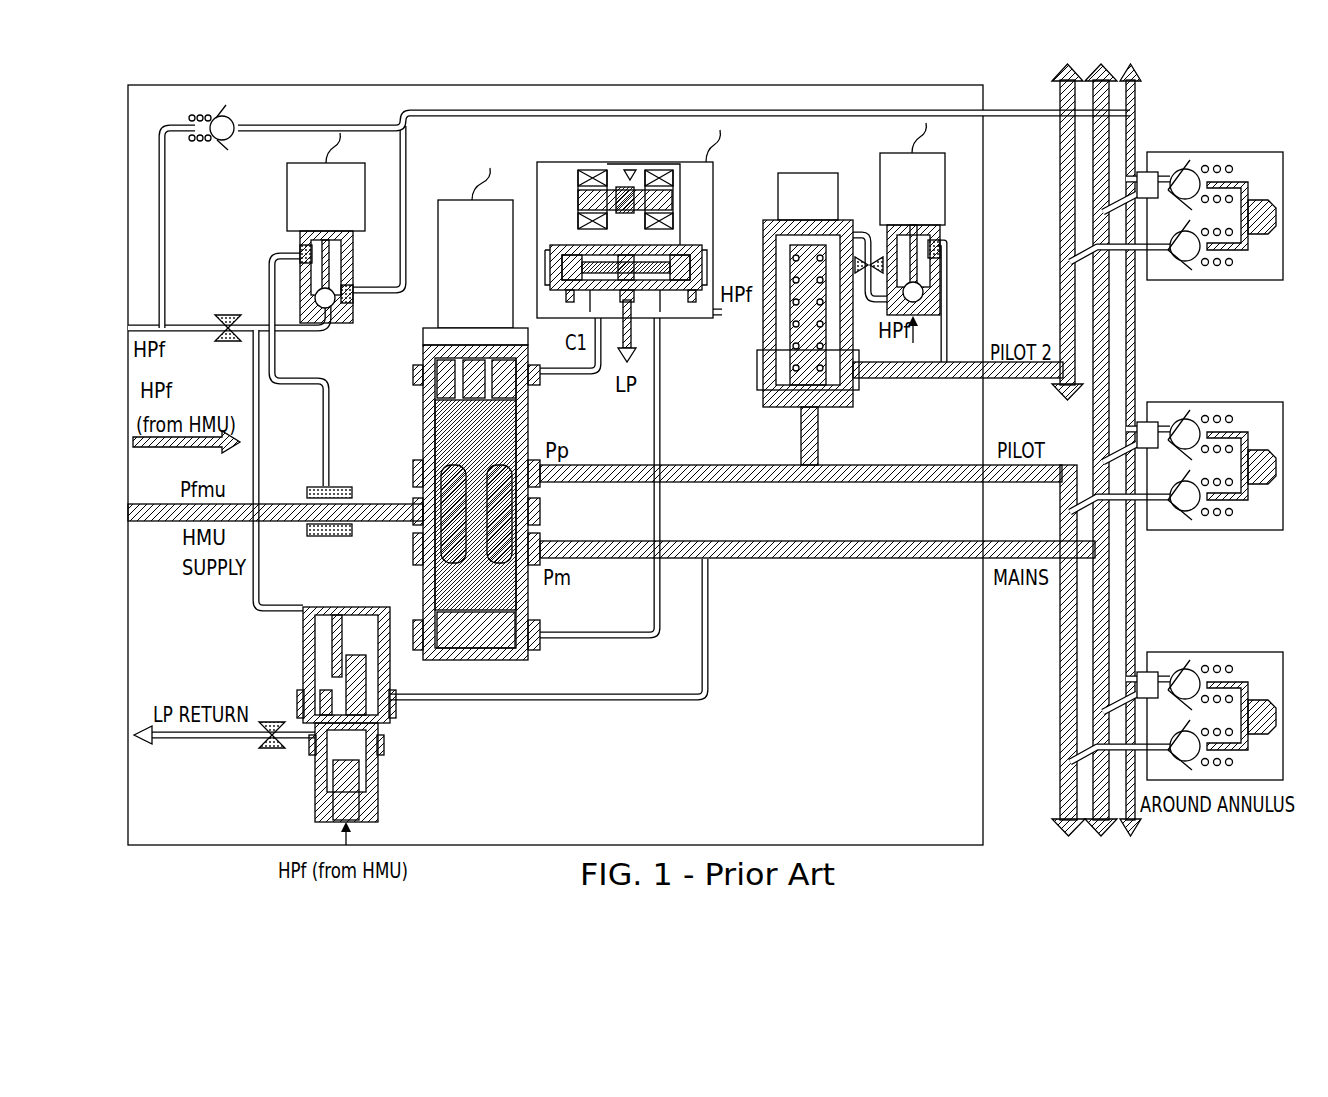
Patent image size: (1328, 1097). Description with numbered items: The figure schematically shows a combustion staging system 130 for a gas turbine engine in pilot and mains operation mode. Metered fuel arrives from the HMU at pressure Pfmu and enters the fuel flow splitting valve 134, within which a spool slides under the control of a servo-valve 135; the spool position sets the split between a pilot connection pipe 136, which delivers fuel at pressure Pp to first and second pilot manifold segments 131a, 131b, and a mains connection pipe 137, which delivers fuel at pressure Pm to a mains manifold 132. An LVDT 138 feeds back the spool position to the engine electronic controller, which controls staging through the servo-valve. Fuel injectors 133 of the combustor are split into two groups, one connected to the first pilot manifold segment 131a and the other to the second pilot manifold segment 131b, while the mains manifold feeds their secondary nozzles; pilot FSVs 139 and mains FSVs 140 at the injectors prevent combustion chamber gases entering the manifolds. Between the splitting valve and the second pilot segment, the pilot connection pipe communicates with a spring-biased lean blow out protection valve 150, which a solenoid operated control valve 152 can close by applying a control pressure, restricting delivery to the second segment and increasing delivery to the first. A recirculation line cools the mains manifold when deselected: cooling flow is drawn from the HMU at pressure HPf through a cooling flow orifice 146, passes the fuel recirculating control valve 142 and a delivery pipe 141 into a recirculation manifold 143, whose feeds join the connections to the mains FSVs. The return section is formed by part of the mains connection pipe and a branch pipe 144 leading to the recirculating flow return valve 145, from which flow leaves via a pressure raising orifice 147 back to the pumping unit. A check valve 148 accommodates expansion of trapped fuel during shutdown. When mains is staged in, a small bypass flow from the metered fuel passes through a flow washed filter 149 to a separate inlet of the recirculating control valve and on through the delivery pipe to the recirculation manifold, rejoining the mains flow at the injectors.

The combustion staging system 130 is at (646, 70).
The first pilot manifold segment 131a is at (1058, 745).
The second pilot manifold segment 131b is at (1058, 312).
The mains manifold 132 is at (1116, 357).
The fuel injectors 133 is at (1210, 202).
The fuel flow splitting valve 134 is at (405, 415).
The servo-valve 135 is at (584, 160).
The pilot connection pipe 136 is at (735, 464).
The mains connection pipe 137 is at (888, 559).
The LVDT 138 is at (501, 285).
The pilot FSVs 139 is at (1189, 262).
The mains FSVs 140 is at (1178, 170).
The delivery pipe 141 is at (912, 108).
The fuel recirculating control valve 142 is at (355, 315).
The recirculation manifold 143 is at (1137, 592).
The branch pipe 144 is at (627, 701).
The recirculating flow return valve 145 is at (396, 751).
The cooling flow orifice 146 is at (224, 316).
The pressure raising orifice 147 is at (270, 722).
The check valve 148 is at (233, 141).
The flow washed filter 149 is at (327, 540).
The lean blow out protection valve 150 is at (766, 250).
The solenoid operated control valve 152 is at (940, 232).